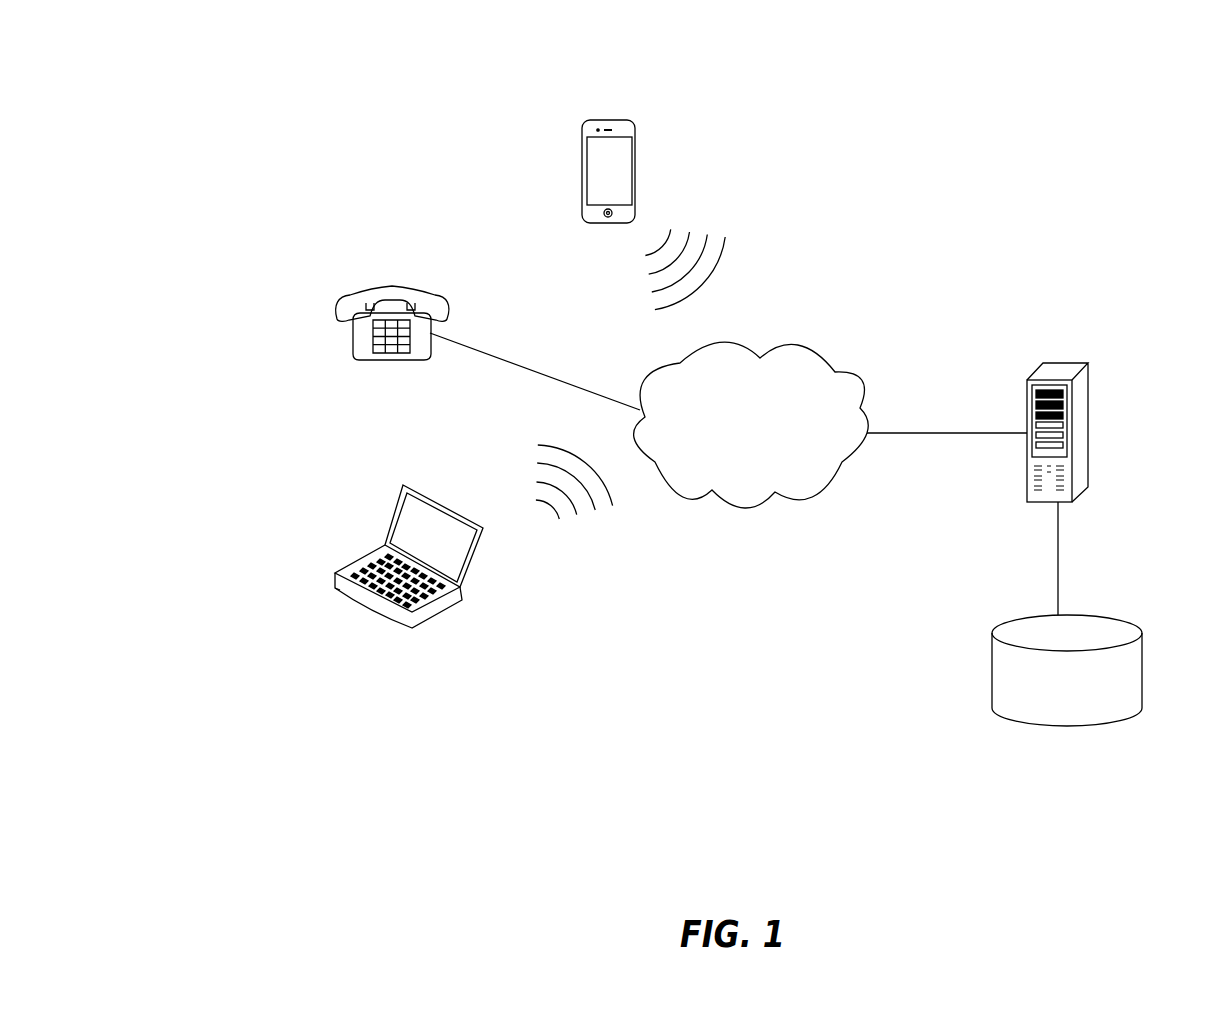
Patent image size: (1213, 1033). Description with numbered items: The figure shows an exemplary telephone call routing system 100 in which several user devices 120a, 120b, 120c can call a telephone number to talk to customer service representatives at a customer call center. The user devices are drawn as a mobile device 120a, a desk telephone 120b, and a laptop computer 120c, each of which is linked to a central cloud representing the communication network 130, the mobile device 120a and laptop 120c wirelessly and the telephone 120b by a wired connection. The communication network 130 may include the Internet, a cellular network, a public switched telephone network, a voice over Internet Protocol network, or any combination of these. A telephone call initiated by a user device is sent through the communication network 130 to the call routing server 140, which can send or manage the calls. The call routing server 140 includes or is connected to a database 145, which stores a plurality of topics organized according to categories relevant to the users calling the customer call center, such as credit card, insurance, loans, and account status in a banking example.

The telephone call routing system 100 is at (201, 113).
The mobile device 120a is at (637, 123).
The user device 120b is at (433, 288).
The user device 120c is at (483, 560).
The communication network 130 is at (802, 345).
The call routing server 140 is at (1068, 355).
The database 145 is at (1122, 622).